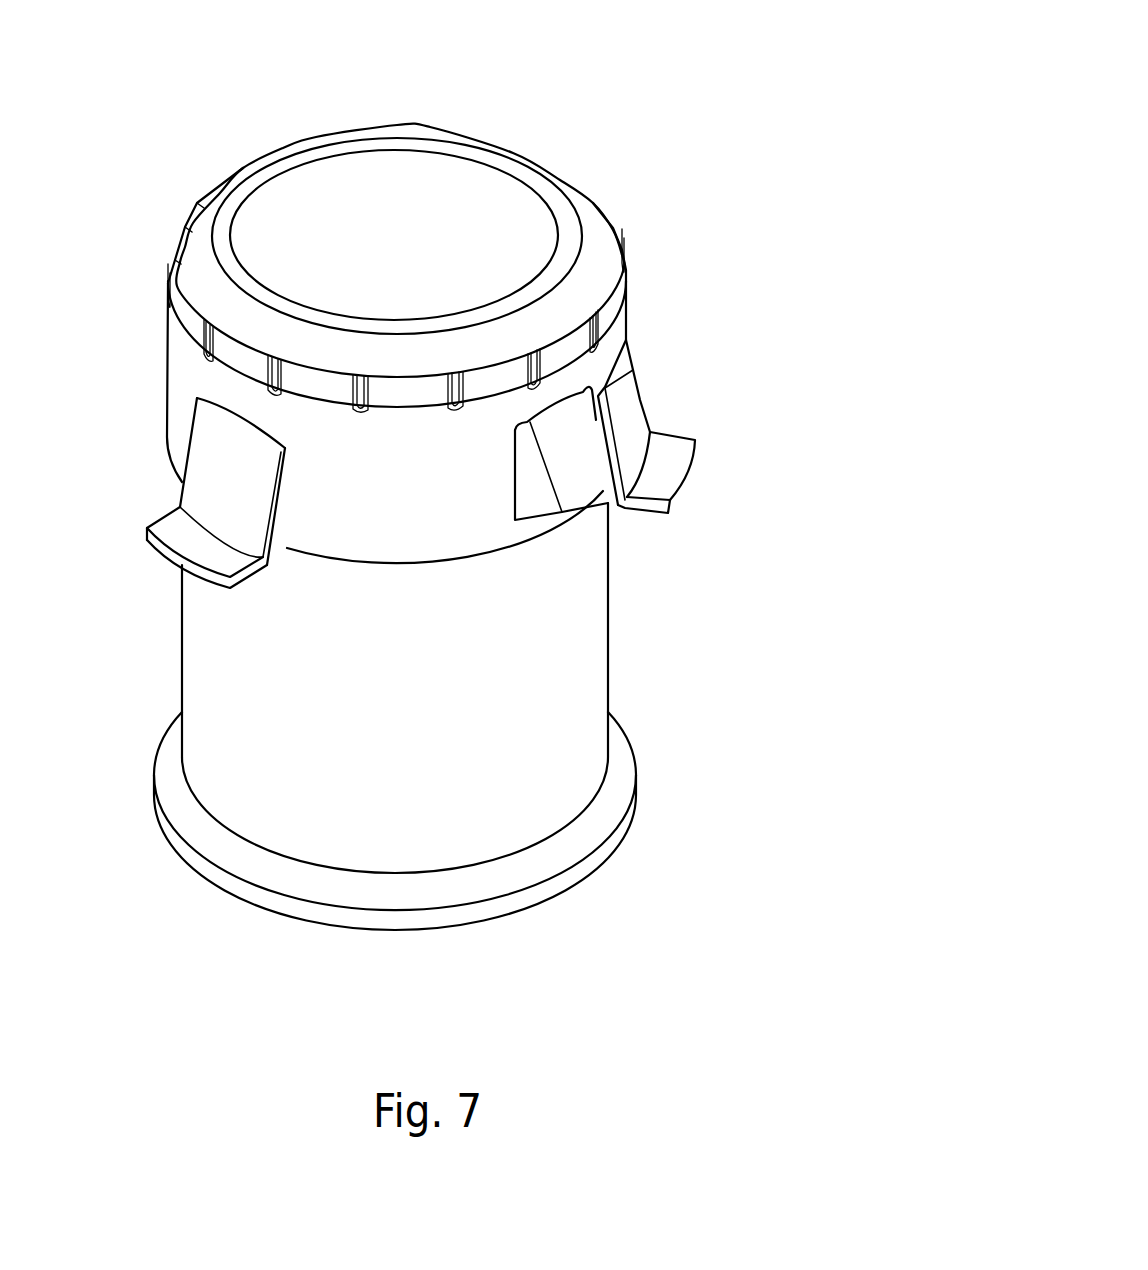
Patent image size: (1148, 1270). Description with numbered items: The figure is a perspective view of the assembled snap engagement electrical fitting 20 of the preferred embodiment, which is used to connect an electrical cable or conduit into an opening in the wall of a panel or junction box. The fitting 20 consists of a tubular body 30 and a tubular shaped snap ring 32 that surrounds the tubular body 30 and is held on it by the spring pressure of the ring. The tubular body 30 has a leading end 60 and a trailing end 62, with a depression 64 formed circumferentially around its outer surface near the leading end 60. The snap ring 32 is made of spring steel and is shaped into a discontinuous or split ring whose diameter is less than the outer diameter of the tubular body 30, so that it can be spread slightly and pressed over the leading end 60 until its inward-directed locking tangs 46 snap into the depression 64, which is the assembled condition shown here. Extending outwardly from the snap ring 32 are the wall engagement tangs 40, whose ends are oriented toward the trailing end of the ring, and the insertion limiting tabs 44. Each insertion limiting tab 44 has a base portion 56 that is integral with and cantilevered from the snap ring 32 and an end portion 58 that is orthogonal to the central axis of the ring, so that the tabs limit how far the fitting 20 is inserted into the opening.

The snap engagement electrical fitting 20 is at (712, 316).
The tubular body 30 is at (410, 727).
The tubular shaped snap ring 32 is at (425, 500).
The wall engagement tang 40 is at (583, 468).
The insertion limiting tab 44 is at (238, 497).
The locking tang 46 is at (503, 377).
The base portion 56 is at (632, 412).
The end portion 58 is at (690, 478).
The leading end 60 is at (394, 125).
The trailing end 62 is at (393, 932).
The depression 64 is at (262, 373).